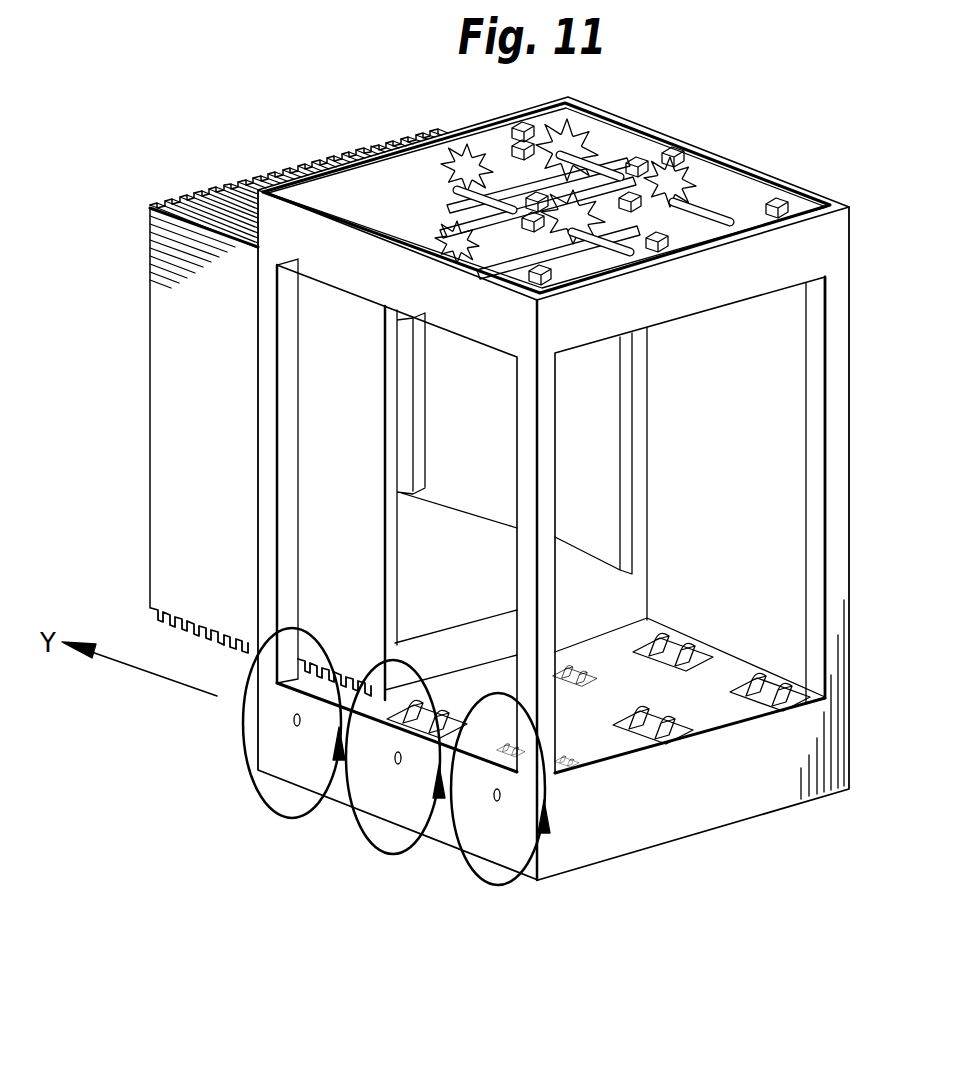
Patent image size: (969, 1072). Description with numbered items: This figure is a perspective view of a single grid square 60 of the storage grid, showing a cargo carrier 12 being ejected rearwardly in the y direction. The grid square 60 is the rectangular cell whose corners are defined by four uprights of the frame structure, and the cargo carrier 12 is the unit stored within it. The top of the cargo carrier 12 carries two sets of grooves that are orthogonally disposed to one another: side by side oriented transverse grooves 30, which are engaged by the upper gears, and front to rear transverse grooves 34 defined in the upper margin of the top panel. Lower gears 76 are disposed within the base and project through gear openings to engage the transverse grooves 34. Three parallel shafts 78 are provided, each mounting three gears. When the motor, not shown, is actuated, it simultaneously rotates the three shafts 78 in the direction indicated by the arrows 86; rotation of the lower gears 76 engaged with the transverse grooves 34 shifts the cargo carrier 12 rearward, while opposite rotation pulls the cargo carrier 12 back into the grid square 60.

The cargo carrier 12 is at (150, 340).
The transverse grooves 34 is at (218, 188).
The transverse grooves 30 is at (152, 614).
The grid square 60 is at (849, 458).
The lower gears 76 is at (767, 675).
The shafts 78 is at (494, 795).
The arrows 86 is at (503, 885).